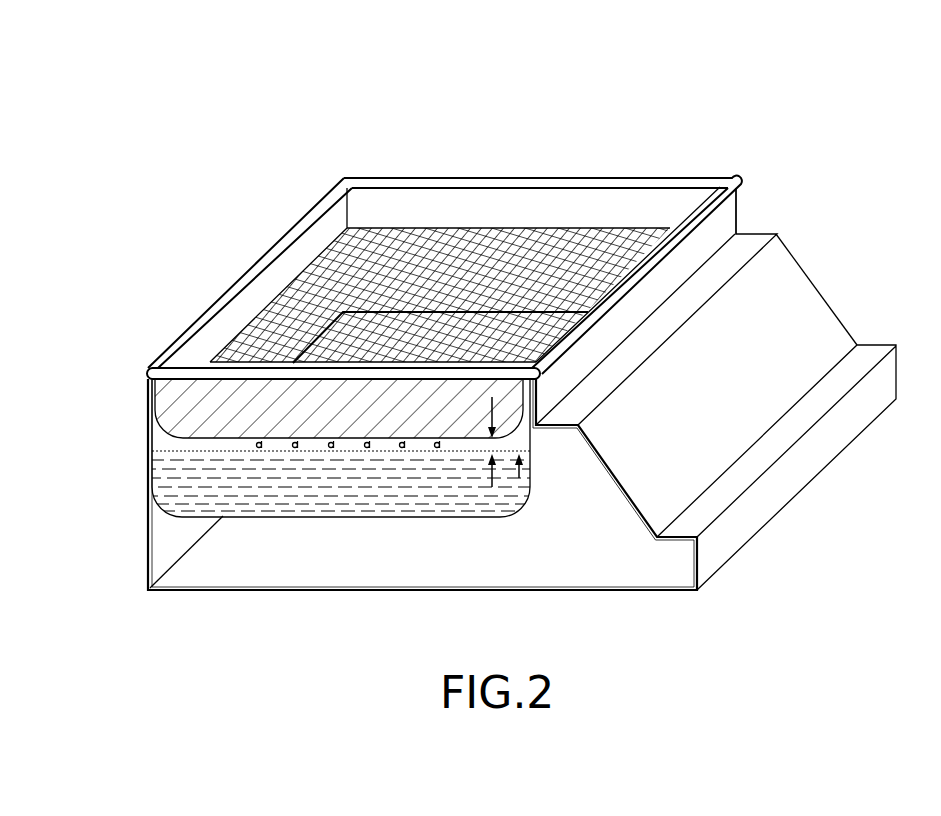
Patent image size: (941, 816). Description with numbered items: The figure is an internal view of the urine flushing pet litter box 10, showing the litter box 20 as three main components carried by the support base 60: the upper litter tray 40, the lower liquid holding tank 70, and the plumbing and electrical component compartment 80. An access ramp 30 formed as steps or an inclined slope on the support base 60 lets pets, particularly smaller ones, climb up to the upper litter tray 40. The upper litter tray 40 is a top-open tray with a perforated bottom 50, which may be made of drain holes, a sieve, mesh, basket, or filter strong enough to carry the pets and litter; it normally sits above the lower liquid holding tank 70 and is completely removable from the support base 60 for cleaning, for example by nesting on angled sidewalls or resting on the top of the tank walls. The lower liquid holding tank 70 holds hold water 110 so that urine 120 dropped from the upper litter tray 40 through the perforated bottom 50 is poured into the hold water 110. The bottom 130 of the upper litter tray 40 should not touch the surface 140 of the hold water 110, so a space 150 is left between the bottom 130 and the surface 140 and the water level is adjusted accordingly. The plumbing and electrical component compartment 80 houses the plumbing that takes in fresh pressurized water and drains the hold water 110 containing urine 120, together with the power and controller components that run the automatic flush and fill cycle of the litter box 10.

The urine flushing pet litter box 10 is at (760, 110).
The litter box 20 is at (736, 204).
The access ramp 30 is at (818, 287).
The upper litter tray 40 is at (165, 389).
The perforated bottom 50 is at (320, 300).
The support base 60 is at (148, 553).
The lower liquid holding tank 70 is at (151, 418).
The plumbing and electrical component compartment 80 is at (403, 572).
The hold water 110 is at (151, 475).
The urine 120 is at (438, 447).
The bottom of the upper litter tray 130 is at (530, 430).
The surface of the hold water 140 is at (521, 466).
The space 150 is at (494, 446).